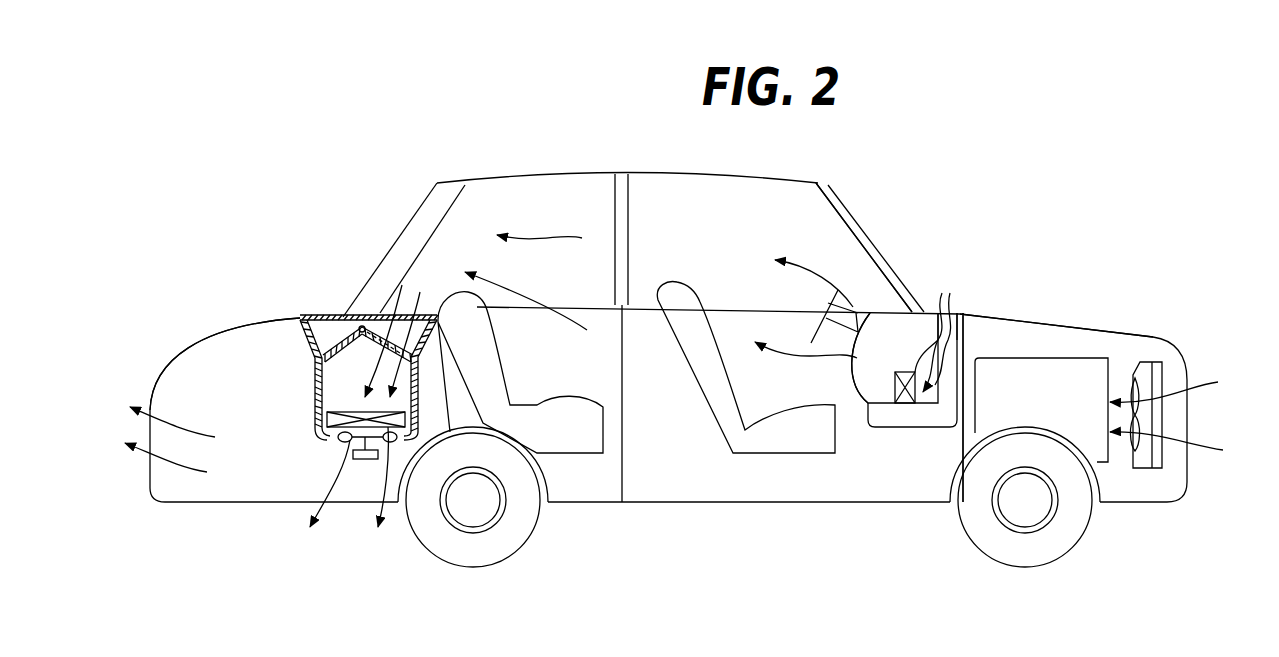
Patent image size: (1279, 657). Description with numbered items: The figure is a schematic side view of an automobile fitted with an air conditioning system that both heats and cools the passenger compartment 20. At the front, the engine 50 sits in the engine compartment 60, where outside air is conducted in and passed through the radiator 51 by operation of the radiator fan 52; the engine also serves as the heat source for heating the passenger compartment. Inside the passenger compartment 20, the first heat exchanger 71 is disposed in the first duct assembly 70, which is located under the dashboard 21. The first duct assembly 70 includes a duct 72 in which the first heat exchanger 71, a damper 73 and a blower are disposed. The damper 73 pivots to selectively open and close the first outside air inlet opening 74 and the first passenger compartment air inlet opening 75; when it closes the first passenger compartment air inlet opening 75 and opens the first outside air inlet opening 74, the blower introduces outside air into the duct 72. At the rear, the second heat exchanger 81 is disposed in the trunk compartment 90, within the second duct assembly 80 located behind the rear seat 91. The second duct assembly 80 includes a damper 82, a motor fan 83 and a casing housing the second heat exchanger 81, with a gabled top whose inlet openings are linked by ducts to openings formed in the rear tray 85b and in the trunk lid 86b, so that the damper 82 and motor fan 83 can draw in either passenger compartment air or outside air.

The passenger compartment 20 is at (729, 229).
The dashboard 21 is at (881, 308).
The engine 50 is at (1052, 406).
The radiator 51 is at (1158, 362).
The radiator fan 52 is at (1130, 468).
The engine compartment 60 is at (1052, 358).
The first duct assembly 70 is at (933, 430).
The first heat exchanger 71 is at (905, 407).
The duct 72 is at (877, 415).
The damper 73 is at (958, 335).
The first outside air inlet opening 74 is at (955, 340).
The first passenger compartment air inlet opening 75 is at (958, 357).
The second duct assembly 80 is at (312, 388).
The second heat exchanger 81 is at (330, 417).
The damper 82 is at (345, 320).
The motor fan 83 is at (343, 440).
The rear tray 85b is at (428, 323).
The trunk lid 86b is at (170, 372).
The trunk compartment 90 is at (247, 478).
The rear seat 91 is at (498, 363).